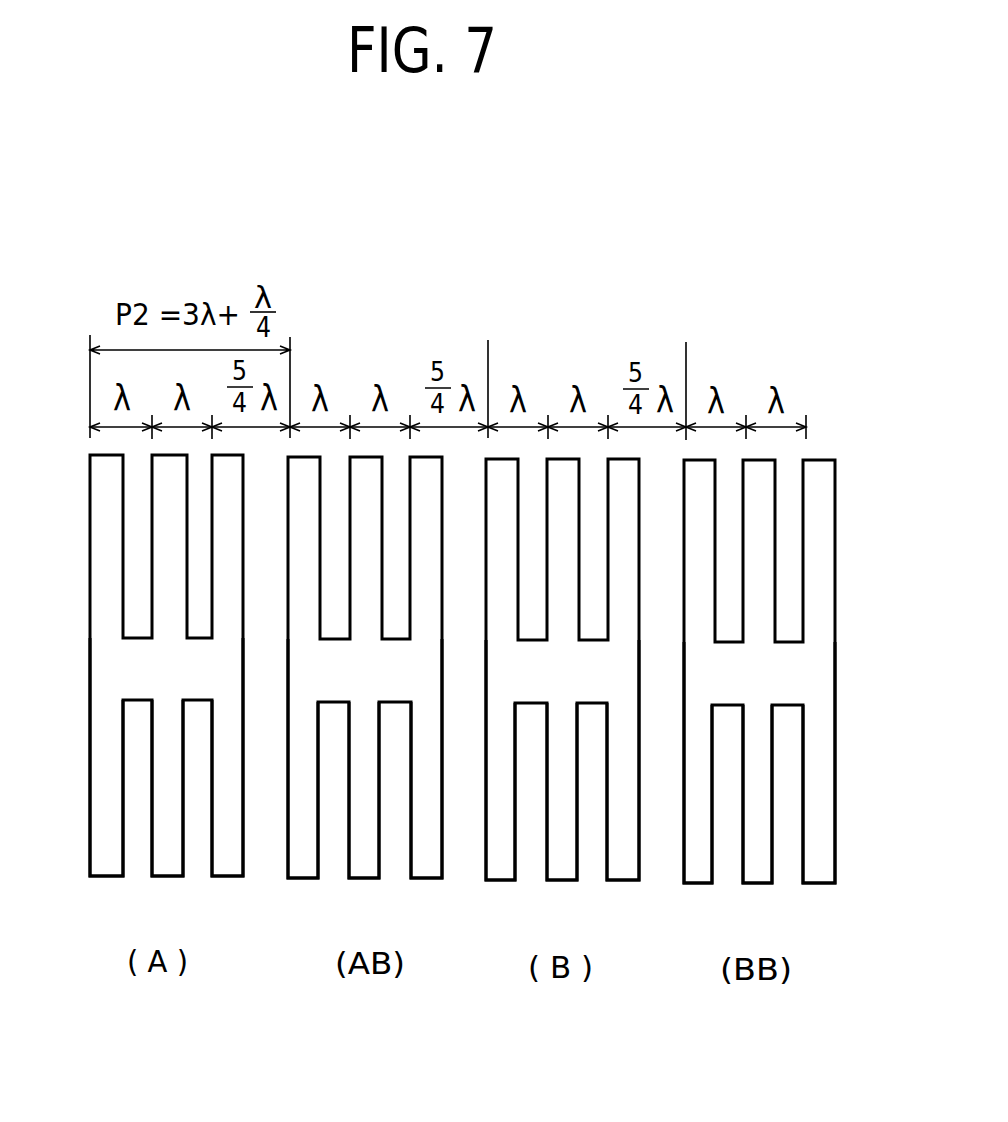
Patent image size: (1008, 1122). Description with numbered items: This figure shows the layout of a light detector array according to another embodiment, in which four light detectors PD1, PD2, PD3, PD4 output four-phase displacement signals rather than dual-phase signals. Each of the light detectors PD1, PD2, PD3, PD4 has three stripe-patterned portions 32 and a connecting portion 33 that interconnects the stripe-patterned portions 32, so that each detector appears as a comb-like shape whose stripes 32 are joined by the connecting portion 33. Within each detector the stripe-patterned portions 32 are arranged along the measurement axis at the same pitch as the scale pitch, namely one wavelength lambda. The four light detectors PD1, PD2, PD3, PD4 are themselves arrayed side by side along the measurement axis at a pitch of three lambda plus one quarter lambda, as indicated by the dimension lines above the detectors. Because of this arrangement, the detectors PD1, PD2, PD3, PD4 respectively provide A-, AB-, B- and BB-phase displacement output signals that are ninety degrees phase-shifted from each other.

The stripe-patterned portions 32 is at (225, 777).
The connecting portion 33 is at (100, 662).
The light detector PD1 is at (128, 888).
The light detector PD2 is at (305, 890).
The light detector PD3 is at (502, 890).
The light detector PD4 is at (698, 890).